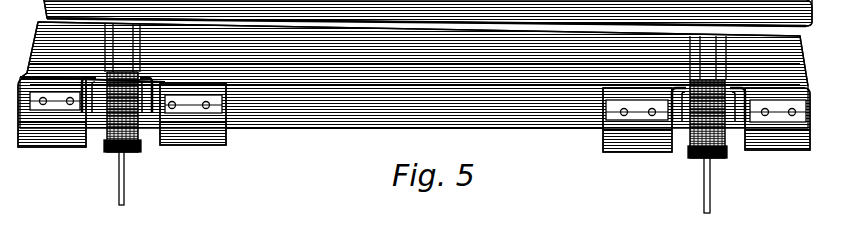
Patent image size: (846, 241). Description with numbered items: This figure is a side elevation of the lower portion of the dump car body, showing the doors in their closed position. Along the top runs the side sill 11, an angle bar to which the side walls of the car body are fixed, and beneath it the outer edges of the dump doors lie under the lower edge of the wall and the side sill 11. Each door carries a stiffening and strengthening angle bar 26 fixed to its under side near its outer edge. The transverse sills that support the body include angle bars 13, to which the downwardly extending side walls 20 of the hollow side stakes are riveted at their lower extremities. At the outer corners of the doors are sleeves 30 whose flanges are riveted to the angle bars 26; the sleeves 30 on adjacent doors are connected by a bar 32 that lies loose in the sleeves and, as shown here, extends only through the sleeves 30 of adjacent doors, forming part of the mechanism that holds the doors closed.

The side sill 11 is at (428, 34).
The angle bars 13 is at (103, 118).
The downwardly extending side walls 20 is at (106, 118).
The stiffening and strengthening angle bar 26 is at (335, 118).
The sleeves 30 is at (642, 149).
The bar 32 is at (674, 151).